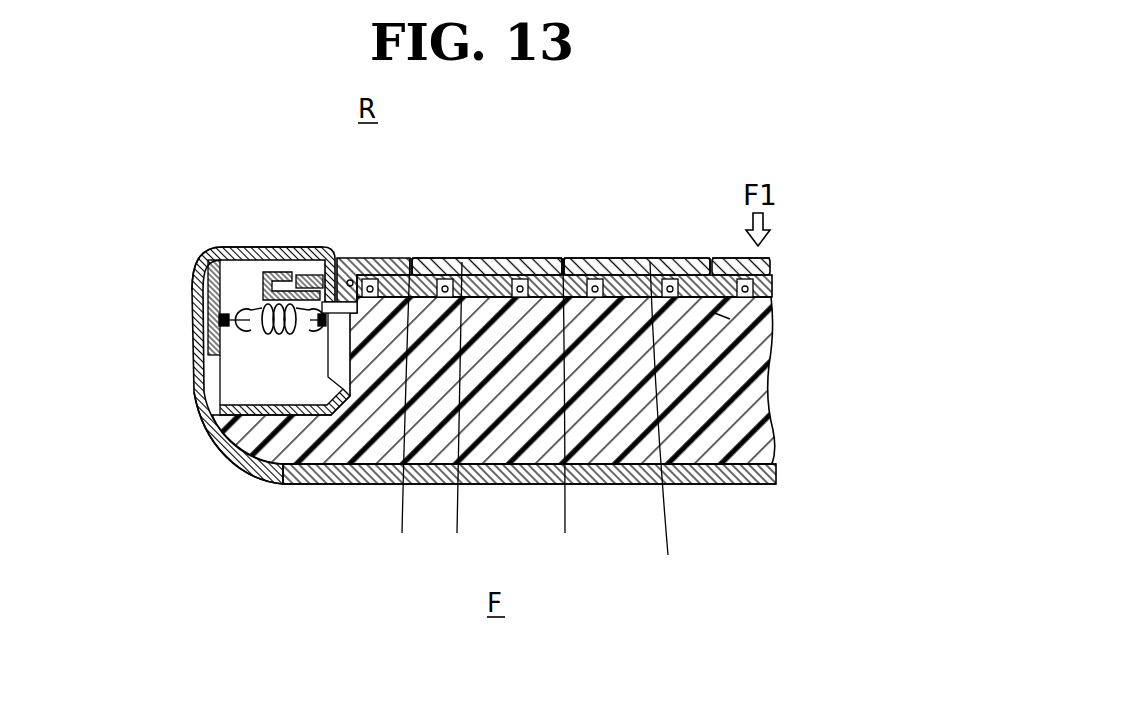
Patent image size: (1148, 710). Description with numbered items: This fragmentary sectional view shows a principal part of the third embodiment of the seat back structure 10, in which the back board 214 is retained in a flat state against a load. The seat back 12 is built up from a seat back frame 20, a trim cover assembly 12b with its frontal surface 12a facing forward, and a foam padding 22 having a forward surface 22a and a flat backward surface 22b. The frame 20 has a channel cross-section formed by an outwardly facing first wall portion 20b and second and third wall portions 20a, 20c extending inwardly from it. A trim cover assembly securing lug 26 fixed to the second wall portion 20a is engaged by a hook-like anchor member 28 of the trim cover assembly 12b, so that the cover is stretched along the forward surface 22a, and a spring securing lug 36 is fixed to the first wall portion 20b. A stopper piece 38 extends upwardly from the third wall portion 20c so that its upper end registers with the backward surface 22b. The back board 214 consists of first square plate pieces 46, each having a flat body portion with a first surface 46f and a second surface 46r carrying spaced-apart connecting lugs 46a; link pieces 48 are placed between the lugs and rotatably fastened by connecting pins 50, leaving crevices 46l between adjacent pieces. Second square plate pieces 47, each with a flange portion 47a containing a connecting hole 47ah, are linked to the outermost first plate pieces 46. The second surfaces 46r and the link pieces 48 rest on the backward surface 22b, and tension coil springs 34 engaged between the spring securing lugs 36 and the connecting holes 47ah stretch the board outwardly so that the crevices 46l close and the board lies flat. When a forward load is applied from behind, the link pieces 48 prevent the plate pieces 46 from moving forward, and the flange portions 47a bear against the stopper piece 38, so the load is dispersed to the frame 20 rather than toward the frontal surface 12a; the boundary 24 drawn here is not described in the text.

The seat back structure 10 is at (622, 165).
The seat back 12 is at (310, 487).
The frontal surface 12a is at (625, 466).
The trim cover assembly 12b is at (778, 479).
The seat back frame 20 is at (203, 300).
The second wall portion 20a is at (246, 247).
The first wall portion 20b is at (210, 362).
The third wall portion 20c is at (221, 445).
The foam padding 22 is at (753, 407).
The forward surface 22a is at (722, 466).
The backward surface 22b is at (773, 268).
The interface layer 24 is at (513, 466).
The trim cover assembly securing lug 26 is at (308, 275).
The hook-like anchor member 28 is at (265, 272).
The tension coil spring 34 is at (247, 330).
The spring securing lug 36 is at (197, 268).
The stopper piece 38 is at (351, 390).
The first square plate piece 46 is at (441, 252).
The connecting lug 46a is at (523, 257).
The first surface 46f is at (462, 257).
The crevice 46l is at (411, 257).
The second surface 46r is at (565, 427).
The second square plate piece 47 is at (385, 253).
The flange portion 47a is at (295, 334).
The connecting hole 47ah is at (350, 280).
The link piece 48 is at (793, 343).
The connecting pin 50 is at (512, 283).
The back board 214 is at (517, 185).